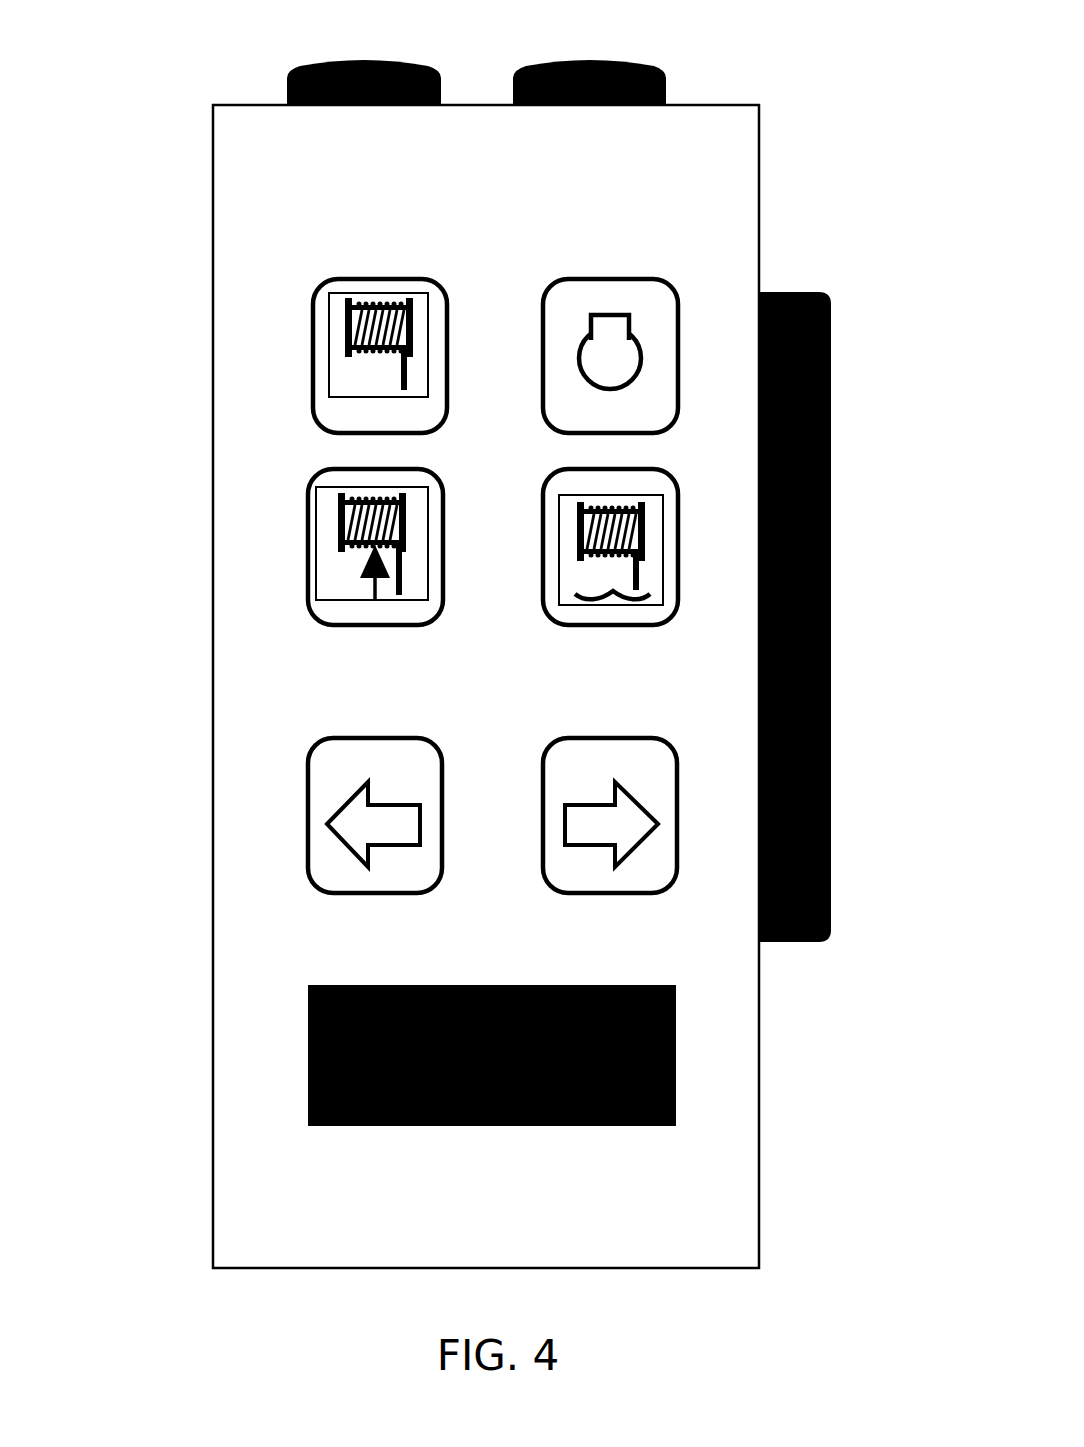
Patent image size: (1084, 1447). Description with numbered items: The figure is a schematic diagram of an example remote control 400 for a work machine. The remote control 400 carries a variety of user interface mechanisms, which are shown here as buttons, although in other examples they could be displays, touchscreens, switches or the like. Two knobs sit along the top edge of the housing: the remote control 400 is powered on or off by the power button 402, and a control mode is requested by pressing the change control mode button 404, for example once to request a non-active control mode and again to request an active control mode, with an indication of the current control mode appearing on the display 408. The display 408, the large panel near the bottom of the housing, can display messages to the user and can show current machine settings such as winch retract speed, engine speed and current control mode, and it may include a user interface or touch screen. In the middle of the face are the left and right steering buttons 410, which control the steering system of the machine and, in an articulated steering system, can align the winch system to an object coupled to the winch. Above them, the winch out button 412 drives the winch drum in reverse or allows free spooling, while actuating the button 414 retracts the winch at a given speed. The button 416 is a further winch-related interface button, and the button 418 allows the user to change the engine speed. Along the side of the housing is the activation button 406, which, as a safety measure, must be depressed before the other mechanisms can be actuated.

The remote control 400 is at (147, 41).
The power button 402 is at (575, 58).
The change control mode button 404 is at (363, 58).
The activation button 406 is at (831, 553).
The display 408 is at (408, 1126).
The buttons 410 is at (407, 738).
The winch out button 412 is at (583, 625).
The button 414 is at (433, 475).
The button 416 is at (400, 279).
The button 418 is at (617, 279).